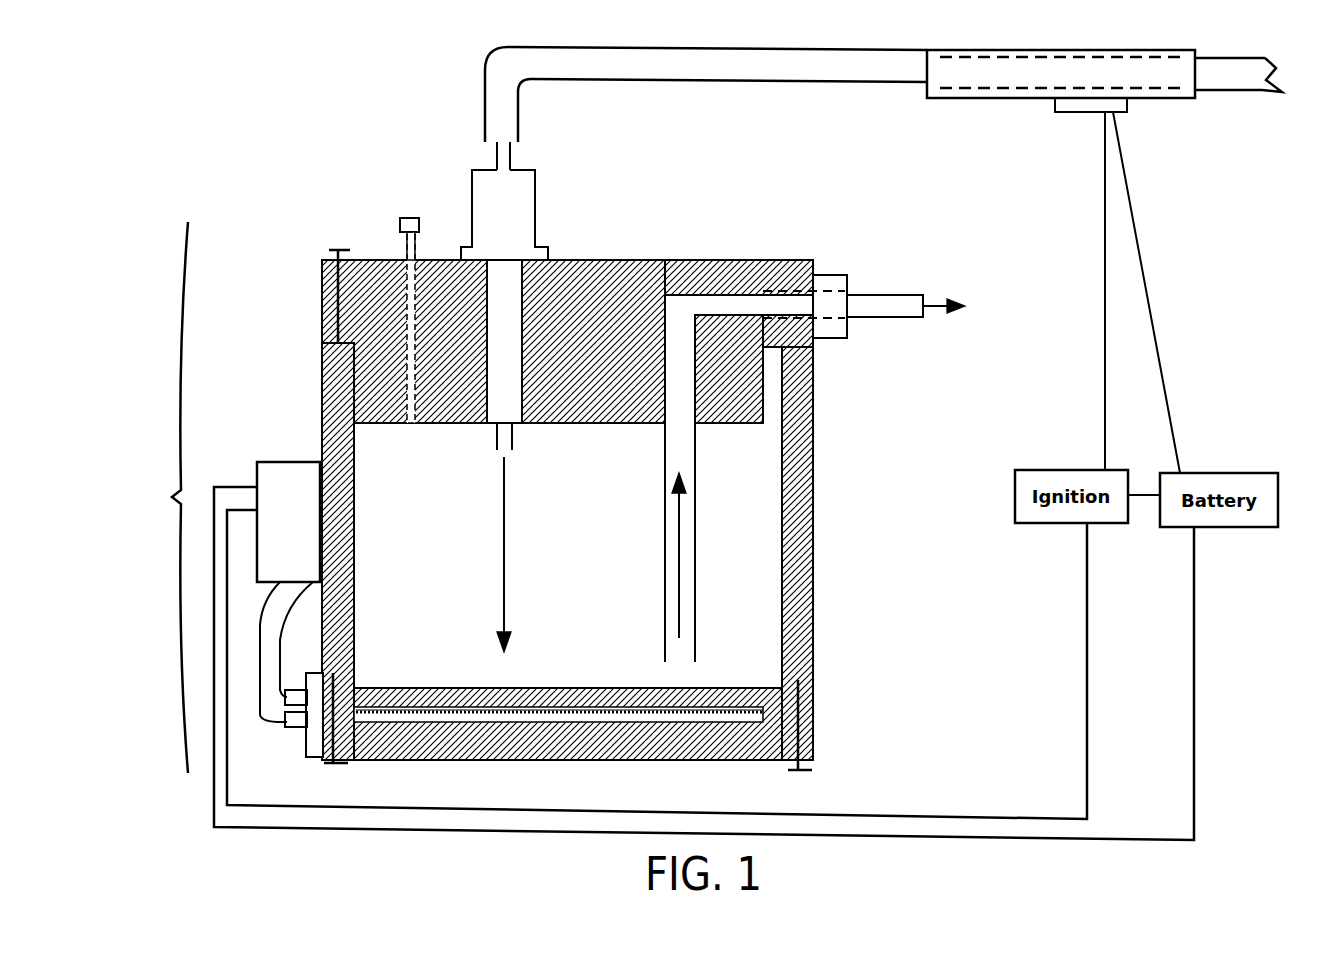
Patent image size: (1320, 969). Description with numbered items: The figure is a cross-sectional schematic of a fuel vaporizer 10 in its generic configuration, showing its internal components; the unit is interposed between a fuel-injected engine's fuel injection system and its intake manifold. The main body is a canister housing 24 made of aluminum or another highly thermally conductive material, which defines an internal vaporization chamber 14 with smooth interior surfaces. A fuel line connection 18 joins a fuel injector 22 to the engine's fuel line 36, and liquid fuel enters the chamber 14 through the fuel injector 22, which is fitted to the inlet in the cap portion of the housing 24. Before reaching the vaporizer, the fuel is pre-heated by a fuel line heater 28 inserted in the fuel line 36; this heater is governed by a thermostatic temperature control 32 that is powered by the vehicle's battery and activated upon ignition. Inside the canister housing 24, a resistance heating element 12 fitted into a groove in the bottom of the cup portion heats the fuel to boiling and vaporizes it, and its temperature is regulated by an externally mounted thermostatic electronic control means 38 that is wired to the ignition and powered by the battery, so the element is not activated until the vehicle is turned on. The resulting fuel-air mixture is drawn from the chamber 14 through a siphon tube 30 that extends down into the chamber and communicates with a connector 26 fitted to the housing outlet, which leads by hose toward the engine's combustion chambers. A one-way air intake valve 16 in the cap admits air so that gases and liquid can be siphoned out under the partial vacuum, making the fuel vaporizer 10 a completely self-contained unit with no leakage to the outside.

The fuel vaporizer 10 is at (159, 497).
The resistance heating element 12 is at (610, 713).
The vaporization chamber 14 is at (596, 583).
The one-way air intake valve 16 is at (410, 217).
The fuel line connection 18 is at (497, 155).
The fuel injector 22 is at (535, 202).
The canister housing 24 is at (852, 547).
The connector 26 is at (832, 270).
The fuel line heater 28 is at (947, 98).
The siphon tube 30 is at (663, 628).
The thermostatic temperature control 32 is at (1055, 112).
The fuel line 36 is at (720, 83).
The thermostatic electronic control means 38 is at (293, 462).